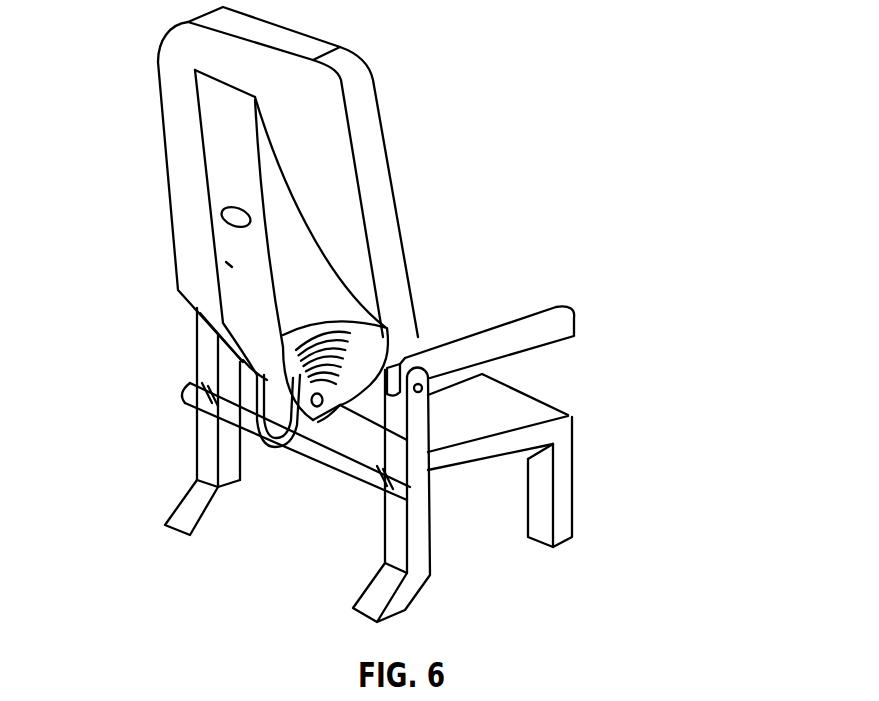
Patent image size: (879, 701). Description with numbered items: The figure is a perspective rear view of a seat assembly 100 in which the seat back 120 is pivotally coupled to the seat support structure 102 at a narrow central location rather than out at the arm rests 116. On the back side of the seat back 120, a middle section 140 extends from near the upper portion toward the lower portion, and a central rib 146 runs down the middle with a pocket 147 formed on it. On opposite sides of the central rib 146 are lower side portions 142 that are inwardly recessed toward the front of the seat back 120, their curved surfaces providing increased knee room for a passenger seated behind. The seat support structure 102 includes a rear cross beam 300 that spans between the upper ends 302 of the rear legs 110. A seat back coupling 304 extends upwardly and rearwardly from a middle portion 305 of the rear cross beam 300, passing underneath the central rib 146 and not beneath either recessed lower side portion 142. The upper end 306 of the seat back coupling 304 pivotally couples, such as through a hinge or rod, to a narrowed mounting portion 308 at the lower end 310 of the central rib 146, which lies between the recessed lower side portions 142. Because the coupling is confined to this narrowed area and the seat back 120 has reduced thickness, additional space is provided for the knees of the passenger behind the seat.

The seat assembly 100 is at (128, 55).
The seat support structure 102 is at (600, 463).
The rear legs 110 is at (192, 468).
The arm rests 116 is at (538, 317).
The seat back 120 is at (360, 125).
The middle section 140 is at (230, 182).
The lower side portions 142 is at (388, 350).
The central rib 146 is at (232, 267).
The pocket 147 is at (252, 219).
The rear cross beam 300 is at (358, 467).
The upper ends 302 is at (187, 397).
The seat back coupling 304 is at (285, 440).
The middle portion 305 is at (272, 437).
The upper end 306 is at (270, 395).
The narrowed mounting portion 308 is at (222, 327).
The lower end 310 is at (276, 352).